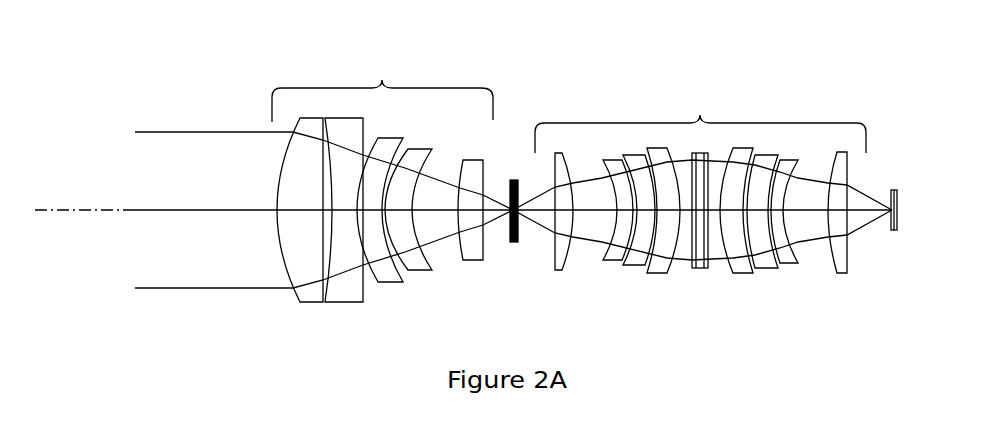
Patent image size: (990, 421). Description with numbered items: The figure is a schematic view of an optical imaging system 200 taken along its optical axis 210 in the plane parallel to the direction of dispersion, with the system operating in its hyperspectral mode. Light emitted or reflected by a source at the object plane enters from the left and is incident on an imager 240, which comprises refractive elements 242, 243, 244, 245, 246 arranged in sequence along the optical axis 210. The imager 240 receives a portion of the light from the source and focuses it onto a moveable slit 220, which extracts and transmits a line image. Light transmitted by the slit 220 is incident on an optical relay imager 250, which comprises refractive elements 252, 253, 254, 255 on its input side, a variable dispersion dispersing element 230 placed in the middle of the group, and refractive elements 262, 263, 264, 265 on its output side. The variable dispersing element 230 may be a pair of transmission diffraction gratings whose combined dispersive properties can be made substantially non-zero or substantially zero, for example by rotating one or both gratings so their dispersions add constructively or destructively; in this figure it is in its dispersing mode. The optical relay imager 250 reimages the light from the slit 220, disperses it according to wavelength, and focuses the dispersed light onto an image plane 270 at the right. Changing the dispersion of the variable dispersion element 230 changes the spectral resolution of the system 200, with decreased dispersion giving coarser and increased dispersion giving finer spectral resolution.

The optical imaging system 200 is at (100, 85).
The optical axis 210 is at (72, 215).
The moveable slit 220 is at (513, 243).
The variable dispersion dispersing element 230 is at (702, 270).
The imager 240 is at (382, 80).
The refractive element 242 is at (313, 303).
The refractive element 243 is at (342, 303).
The refractive element 244 is at (387, 283).
The refractive element 245 is at (418, 270).
The refractive element 246 is at (475, 262).
The optical relay imager 250 is at (700, 115).
The refractive element 252 is at (562, 270).
The refractive element 253 is at (610, 265).
The refractive element 254 is at (635, 273).
The refractive element 255 is at (655, 275).
The refractive element 262 is at (743, 277).
The refractive element 263 is at (770, 272).
The refractive element 264 is at (792, 268).
The refractive element 265 is at (843, 270).
The image plane 270 is at (900, 200).